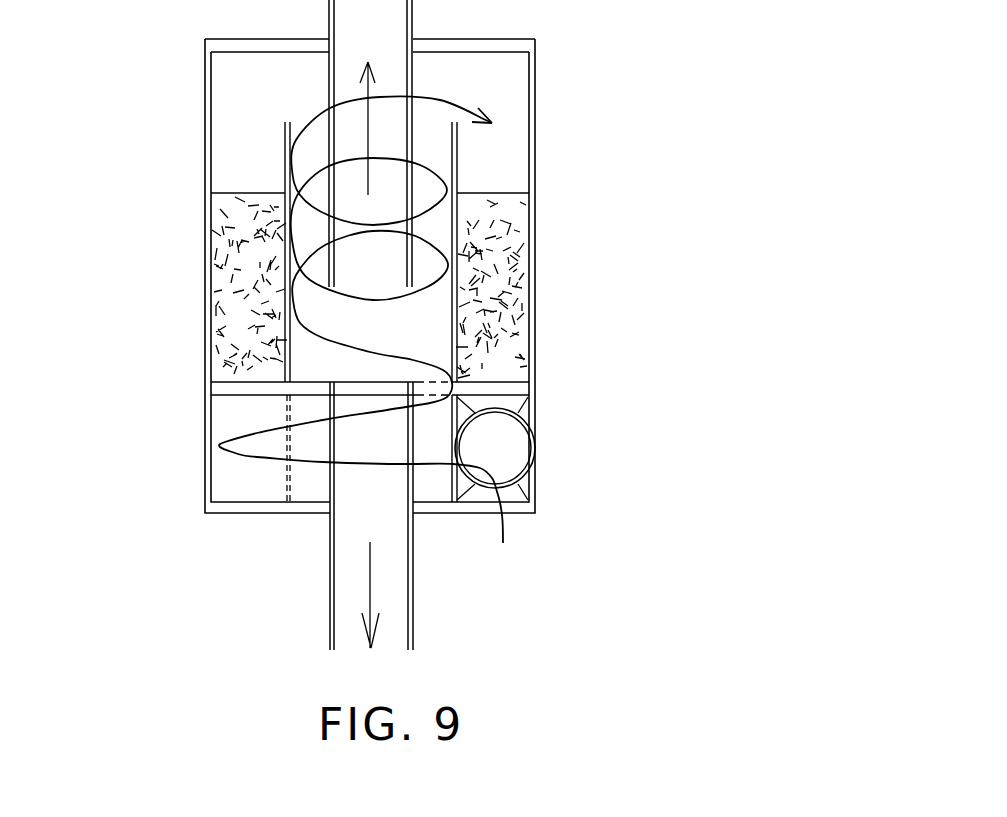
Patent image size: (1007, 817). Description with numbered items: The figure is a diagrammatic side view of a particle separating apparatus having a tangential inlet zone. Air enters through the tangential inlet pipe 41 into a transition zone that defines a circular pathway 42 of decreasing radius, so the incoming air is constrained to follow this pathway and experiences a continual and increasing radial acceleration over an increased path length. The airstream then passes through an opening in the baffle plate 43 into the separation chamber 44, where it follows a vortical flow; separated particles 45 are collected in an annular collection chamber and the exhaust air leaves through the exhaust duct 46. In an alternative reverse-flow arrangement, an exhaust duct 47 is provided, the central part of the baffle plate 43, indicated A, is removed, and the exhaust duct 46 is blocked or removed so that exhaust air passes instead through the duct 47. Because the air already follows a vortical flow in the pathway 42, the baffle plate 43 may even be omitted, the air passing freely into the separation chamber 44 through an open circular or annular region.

The tangential inlet pipe 41 is at (525, 470).
The circular pathway 42 is at (310, 487).
The baffle plate 43 is at (225, 387).
The separation chamber 44 is at (307, 143).
The particles 45 is at (228, 252).
The exhaust duct 46 is at (397, 16).
The exhaust duct 47 is at (392, 598).
The central part of baffle plate A is at (387, 380).